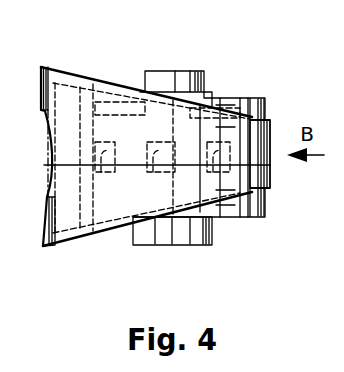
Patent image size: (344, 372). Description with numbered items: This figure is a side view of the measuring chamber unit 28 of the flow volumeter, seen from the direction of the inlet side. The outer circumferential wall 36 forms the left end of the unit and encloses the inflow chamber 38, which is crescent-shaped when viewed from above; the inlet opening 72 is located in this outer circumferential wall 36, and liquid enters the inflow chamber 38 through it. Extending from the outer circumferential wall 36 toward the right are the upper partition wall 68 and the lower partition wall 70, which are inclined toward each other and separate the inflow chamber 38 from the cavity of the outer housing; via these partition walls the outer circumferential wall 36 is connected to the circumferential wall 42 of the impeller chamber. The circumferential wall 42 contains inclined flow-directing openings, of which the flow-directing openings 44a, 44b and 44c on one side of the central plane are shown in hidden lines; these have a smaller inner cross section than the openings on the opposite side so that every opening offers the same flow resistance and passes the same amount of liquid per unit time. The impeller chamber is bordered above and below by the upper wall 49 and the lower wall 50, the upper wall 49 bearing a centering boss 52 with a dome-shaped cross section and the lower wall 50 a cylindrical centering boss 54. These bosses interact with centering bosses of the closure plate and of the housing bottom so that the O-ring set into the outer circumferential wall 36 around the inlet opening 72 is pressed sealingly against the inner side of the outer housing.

The measuring chamber unit 28 is at (216, 66).
The outer circumferential wall 36 is at (125, 123).
The inflow chamber 38 is at (56, 248).
The circumferential wall 42 is at (266, 100).
The flow-directing opening 44a is at (71, 206).
The flow-directing opening 44b is at (153, 172).
The flow-directing opening 44c is at (213, 172).
The upper wall 49 is at (233, 98).
The lower wall 50 is at (245, 218).
The centering boss 52 is at (160, 76).
The cylindrical centering boss 54 is at (186, 238).
The upper partition wall 68 is at (72, 71).
The lower partition wall 70 is at (118, 228).
The inlet opening 72 is at (46, 186).